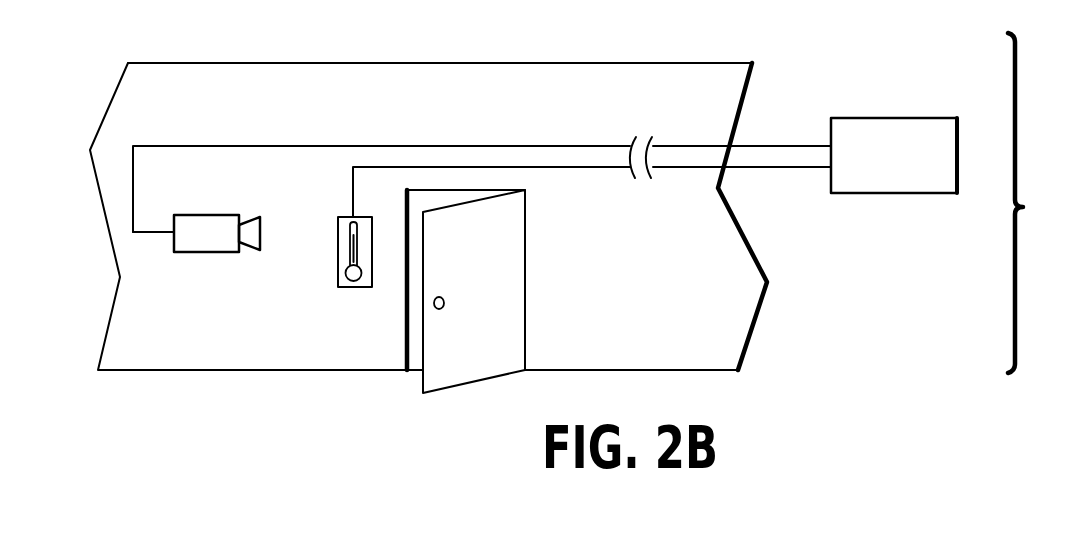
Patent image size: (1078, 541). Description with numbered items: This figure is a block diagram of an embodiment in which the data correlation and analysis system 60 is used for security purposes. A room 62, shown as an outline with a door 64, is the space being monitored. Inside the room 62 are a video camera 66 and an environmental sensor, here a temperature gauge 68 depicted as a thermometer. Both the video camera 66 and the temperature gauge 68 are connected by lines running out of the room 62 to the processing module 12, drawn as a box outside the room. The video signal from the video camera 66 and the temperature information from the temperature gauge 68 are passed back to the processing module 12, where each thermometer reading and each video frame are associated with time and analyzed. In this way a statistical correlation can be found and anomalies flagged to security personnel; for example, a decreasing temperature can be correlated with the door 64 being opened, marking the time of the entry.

The processing module 12 is at (873, 171).
The data correlation and analysis system 60 is at (1037, 203).
The room 62 is at (268, 352).
The door 64 is at (507, 275).
The video camera 66 is at (205, 227).
The temperature gauge 68 is at (337, 232).